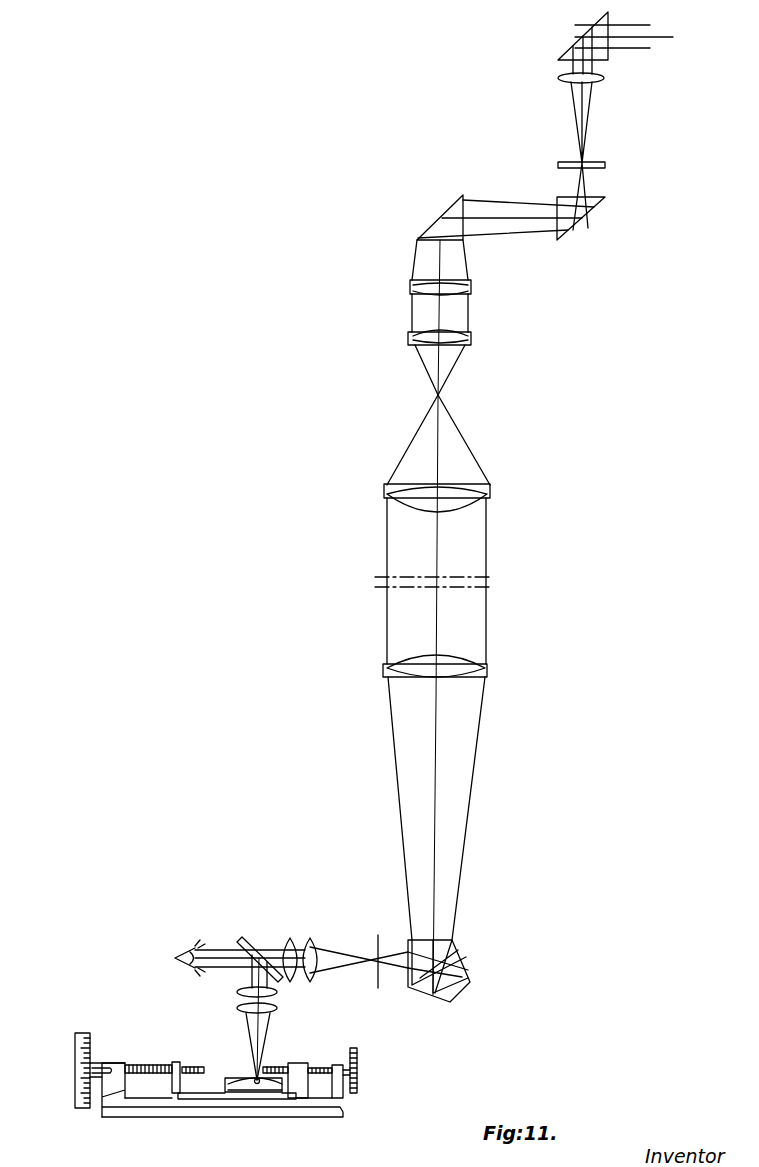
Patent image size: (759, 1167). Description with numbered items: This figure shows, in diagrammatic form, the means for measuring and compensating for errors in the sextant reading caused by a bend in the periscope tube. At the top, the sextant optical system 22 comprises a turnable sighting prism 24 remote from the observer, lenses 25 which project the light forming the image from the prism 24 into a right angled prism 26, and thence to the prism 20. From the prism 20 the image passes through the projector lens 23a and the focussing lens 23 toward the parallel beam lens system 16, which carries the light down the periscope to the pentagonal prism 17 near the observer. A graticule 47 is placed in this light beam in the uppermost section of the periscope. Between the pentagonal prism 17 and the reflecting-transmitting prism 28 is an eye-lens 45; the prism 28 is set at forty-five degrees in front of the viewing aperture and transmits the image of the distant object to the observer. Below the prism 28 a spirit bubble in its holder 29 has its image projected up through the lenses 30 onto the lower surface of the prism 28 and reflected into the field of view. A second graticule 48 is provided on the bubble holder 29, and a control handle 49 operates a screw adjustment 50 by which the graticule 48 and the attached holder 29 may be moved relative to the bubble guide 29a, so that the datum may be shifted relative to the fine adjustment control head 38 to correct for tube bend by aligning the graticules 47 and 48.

The parallel beam lens system 16 is at (393, 663).
The pentagonal prism 17 is at (438, 948).
The prism 20 is at (463, 242).
The sextant optical system 22 is at (650, 247).
The focussing lens 23 is at (471, 340).
The projector lens 23a is at (410, 288).
The prism 24 is at (600, 52).
The lenses 25 is at (598, 80).
The right angled prism 26 is at (575, 230).
The reflecting-transmitting member or prism 28 is at (250, 940).
The spirit-bubble holder 29 is at (267, 1085).
The bubble guide 29a is at (227, 1100).
The lenses 30 is at (272, 1002).
The fine adjustment control head 38 is at (80, 1108).
The eye-lens 45 is at (300, 943).
The graticule 47 is at (600, 163).
The graticule 48 is at (237, 1078).
The control handle 49 is at (357, 1062).
The screw adjustment 50 is at (313, 1070).